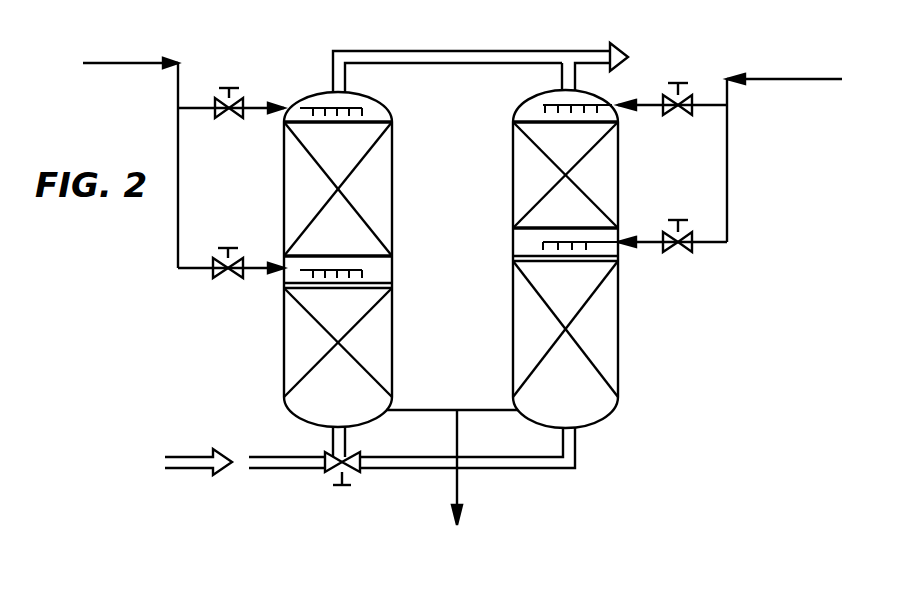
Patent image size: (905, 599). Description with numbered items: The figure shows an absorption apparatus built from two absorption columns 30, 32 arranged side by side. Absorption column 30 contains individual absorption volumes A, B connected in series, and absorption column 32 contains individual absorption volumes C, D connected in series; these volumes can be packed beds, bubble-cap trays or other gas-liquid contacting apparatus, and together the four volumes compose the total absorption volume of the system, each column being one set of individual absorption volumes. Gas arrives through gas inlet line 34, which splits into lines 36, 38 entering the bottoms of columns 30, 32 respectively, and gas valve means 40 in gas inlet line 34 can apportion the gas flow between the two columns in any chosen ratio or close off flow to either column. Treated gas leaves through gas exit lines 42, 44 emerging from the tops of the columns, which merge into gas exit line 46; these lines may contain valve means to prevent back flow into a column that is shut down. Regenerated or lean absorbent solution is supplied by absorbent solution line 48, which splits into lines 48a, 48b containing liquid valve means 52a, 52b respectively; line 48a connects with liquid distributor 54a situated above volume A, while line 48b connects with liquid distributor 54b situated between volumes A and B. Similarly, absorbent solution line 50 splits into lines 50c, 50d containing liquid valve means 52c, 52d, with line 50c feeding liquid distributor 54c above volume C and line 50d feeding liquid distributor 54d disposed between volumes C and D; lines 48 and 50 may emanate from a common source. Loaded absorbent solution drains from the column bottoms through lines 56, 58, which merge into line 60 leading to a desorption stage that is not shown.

The absorption column 30 is at (333, 259).
The absorption column 32 is at (569, 259).
The gas inlet line 34 is at (277, 470).
The line 36 is at (347, 437).
The line 38 is at (405, 470).
The gas valve means 40 is at (352, 472).
The gas exit line 42 is at (352, 51).
The gas exit line 44 is at (578, 85).
The gas exit line 46 is at (585, 50).
The absorbent solution line 48 is at (137, 62).
The line 48a is at (258, 106).
The line 48b is at (255, 266).
The absorbent solution line 50 is at (782, 79).
The line 50c is at (647, 107).
The line 50d is at (645, 245).
The liquid valve means 52a is at (222, 116).
The liquid valve means 52b is at (222, 278).
The liquid valve means 52c is at (688, 100).
The liquid valve means 52d is at (688, 238).
The liquid distributor 54a is at (362, 108).
The liquid distributor 54b is at (362, 272).
The liquid distributor 54c is at (545, 100).
The liquid distributor 54d is at (543, 247).
The line 56 is at (418, 408).
The line 58 is at (475, 408).
The line 60 is at (460, 488).
The individual absorption volume A is at (392, 168).
The individual absorption volume B is at (392, 322).
The individual absorption volume C is at (513, 188).
The individual absorption volume D is at (513, 298).